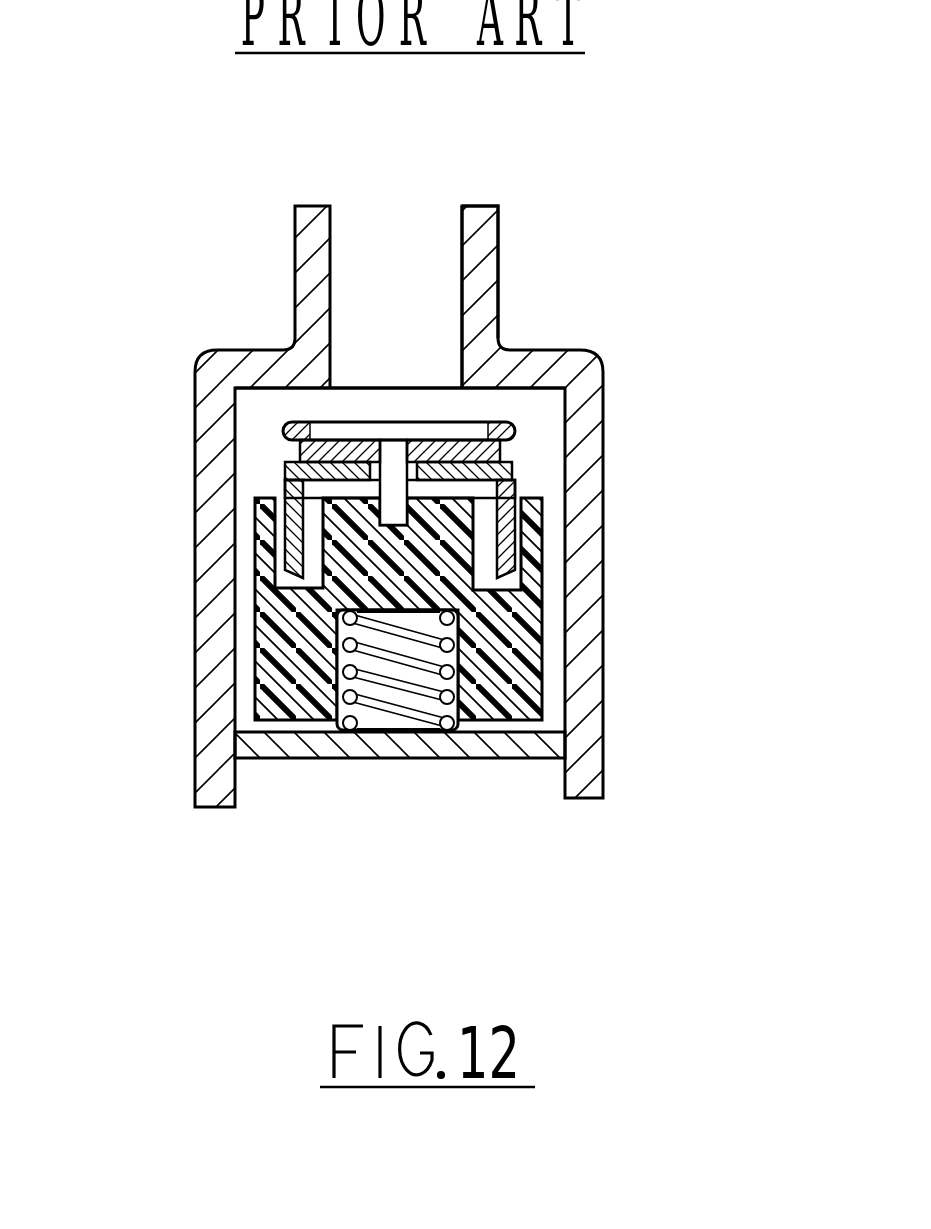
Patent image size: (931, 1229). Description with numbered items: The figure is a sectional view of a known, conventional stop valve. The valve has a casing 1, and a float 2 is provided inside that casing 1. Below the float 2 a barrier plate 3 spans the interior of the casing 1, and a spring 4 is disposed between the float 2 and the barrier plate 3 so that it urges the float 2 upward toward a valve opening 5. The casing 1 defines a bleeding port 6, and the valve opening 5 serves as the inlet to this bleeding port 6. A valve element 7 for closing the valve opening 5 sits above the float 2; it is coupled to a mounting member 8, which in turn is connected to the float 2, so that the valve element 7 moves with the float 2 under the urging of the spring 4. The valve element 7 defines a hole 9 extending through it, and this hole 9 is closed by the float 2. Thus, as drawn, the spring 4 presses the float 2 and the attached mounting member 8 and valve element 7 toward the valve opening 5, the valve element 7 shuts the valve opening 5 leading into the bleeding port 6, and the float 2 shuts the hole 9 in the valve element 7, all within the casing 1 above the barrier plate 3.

The casing 1 is at (606, 688).
The float 2 is at (533, 622).
The barrier plate 3 is at (490, 745).
The spring 4 is at (372, 735).
The valve opening 5 is at (292, 400).
The bleeding port 6 is at (490, 255).
The valve element 7 is at (292, 443).
The mounting member 8 is at (505, 483).
The hole 9 is at (385, 487).